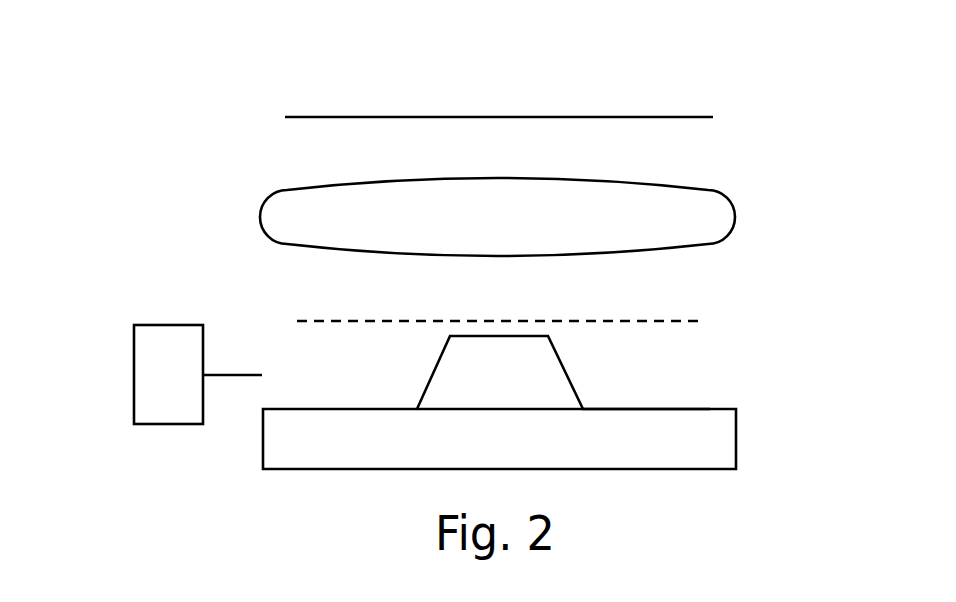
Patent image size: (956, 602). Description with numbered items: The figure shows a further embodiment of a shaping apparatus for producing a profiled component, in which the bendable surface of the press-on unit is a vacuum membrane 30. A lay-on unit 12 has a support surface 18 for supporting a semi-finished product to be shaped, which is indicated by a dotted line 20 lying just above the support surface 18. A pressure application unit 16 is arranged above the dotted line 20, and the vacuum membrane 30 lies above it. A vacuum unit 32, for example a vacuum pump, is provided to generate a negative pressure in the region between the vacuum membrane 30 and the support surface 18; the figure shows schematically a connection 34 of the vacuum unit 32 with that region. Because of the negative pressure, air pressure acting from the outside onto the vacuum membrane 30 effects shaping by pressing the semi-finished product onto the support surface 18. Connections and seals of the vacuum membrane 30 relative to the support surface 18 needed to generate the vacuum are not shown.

The lay-on unit 12 is at (736, 452).
The pressure application unit 16 is at (713, 190).
The support surface 18 is at (710, 409).
The dotted line 20 is at (683, 321).
The vacuum membrane 30 is at (682, 117).
The vacuum unit 32 is at (152, 359).
The connection 34 is at (215, 377).